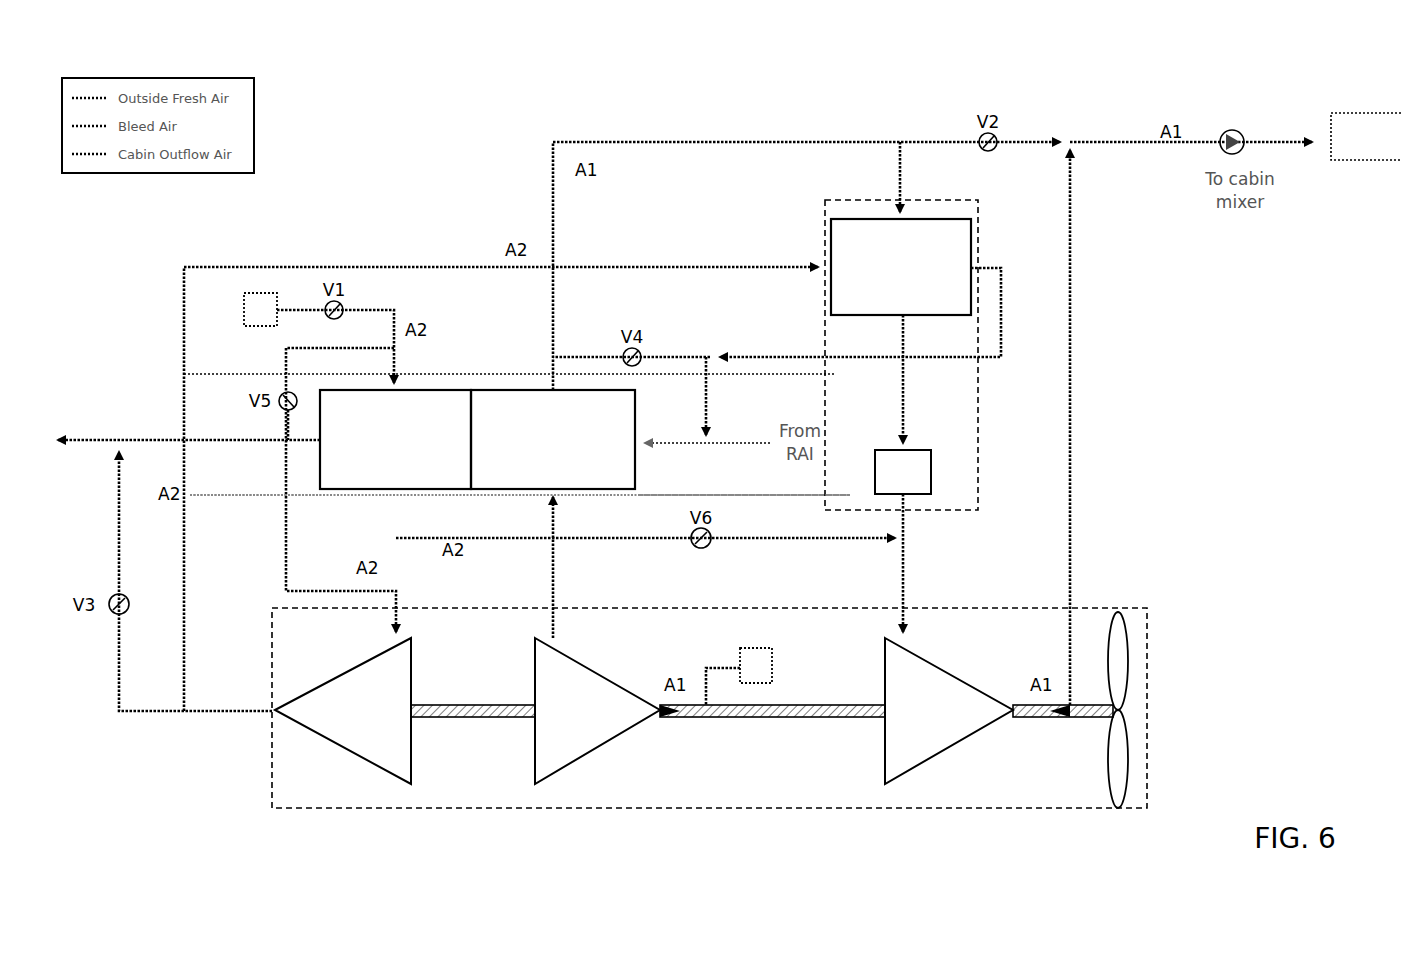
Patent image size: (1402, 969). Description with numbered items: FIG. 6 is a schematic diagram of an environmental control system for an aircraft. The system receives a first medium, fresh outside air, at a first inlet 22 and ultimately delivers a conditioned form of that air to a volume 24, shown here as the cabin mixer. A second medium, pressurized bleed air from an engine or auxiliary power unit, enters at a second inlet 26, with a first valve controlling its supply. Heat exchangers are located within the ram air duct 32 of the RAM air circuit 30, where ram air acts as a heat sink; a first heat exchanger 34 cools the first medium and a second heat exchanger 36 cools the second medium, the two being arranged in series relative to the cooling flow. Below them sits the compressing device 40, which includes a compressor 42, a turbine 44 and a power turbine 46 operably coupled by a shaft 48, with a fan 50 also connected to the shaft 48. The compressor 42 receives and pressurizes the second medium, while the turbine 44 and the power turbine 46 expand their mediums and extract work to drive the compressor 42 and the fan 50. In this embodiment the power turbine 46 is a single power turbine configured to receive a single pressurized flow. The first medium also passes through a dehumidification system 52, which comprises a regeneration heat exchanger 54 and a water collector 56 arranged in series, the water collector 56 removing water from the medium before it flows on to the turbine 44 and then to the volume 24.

The first inlet 22 is at (765, 668).
The volume 24 is at (1366, 136).
The second inlet 26 is at (262, 308).
The RAM air circuit 30 is at (795, 497).
The ram air duct 32 is at (255, 493).
The first heat exchanger 34 is at (553, 439).
The second heat exchanger 36 is at (395, 439).
The compressing device 40 is at (1040, 808).
The compressor 42 is at (614, 738).
The turbine 44 is at (910, 742).
The power turbine 46 is at (371, 742).
The shaft 48 is at (480, 718).
The fan 50 is at (1120, 651).
The dehumidification system 52 is at (985, 418).
The regeneration heat exchanger 54 is at (901, 267).
The water collector 56 is at (955, 510).